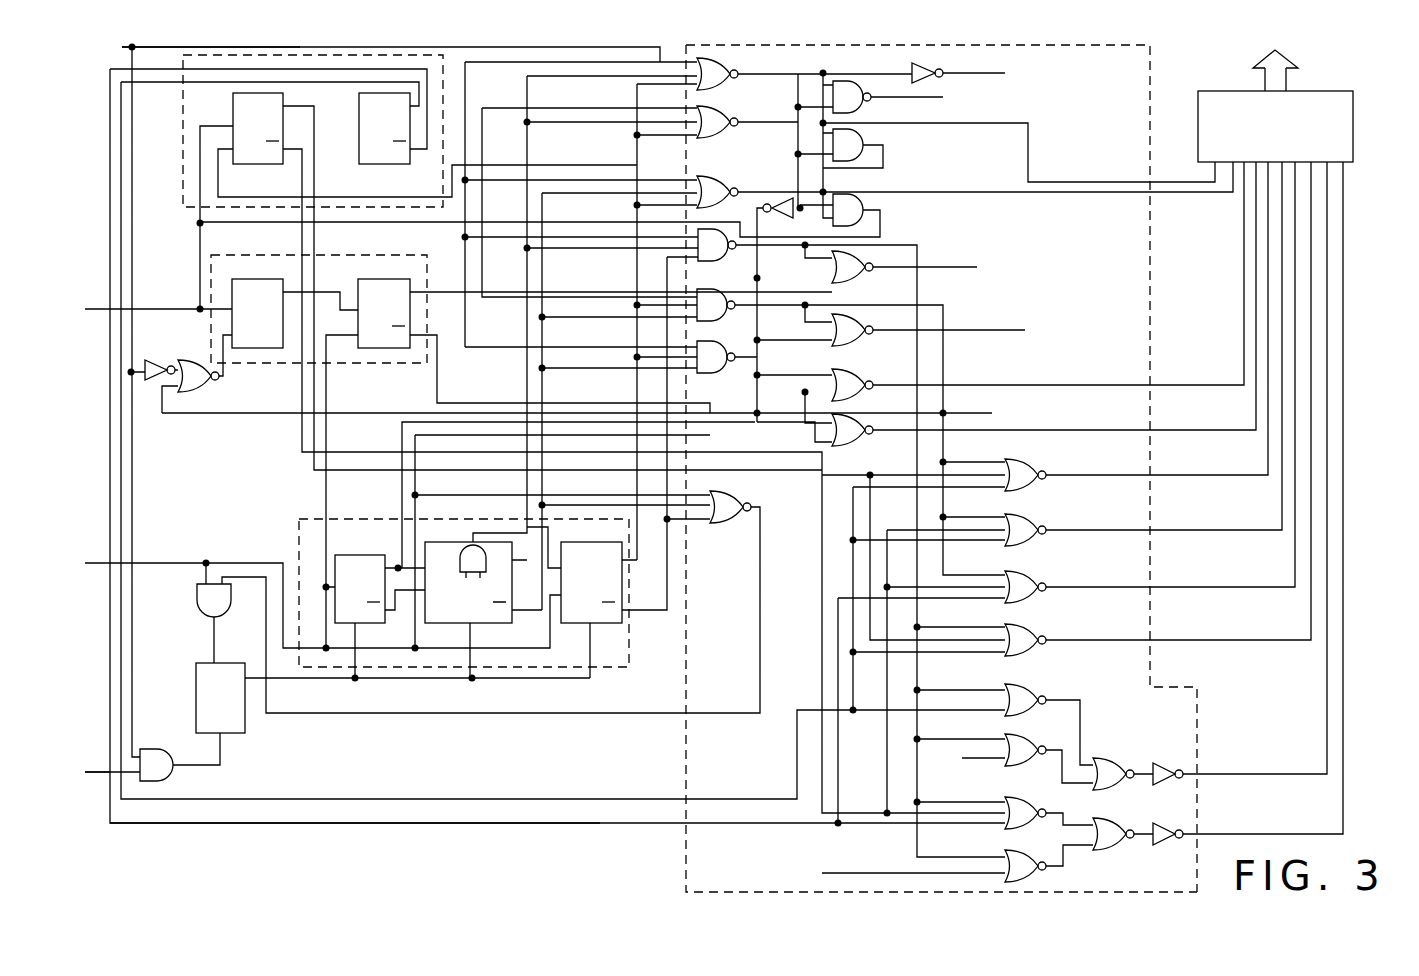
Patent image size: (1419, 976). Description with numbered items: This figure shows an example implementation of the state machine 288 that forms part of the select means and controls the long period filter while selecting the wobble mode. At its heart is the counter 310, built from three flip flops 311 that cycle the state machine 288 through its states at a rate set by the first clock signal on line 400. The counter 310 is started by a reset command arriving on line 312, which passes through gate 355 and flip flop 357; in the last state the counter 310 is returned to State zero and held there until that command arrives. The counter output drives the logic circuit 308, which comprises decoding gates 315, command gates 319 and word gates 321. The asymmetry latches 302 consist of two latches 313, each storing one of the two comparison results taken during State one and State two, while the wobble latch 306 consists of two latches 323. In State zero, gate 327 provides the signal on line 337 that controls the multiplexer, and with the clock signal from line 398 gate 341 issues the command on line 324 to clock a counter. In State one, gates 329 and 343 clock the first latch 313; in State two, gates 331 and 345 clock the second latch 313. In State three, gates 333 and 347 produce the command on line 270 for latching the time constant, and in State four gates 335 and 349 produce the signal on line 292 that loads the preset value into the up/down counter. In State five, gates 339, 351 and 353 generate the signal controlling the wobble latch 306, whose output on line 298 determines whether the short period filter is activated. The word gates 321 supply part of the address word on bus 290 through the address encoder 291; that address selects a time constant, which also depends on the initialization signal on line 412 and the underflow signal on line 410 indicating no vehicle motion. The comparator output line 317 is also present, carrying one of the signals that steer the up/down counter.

The state machine 288 is at (312, 840).
The bus 290 is at (1288, 82).
The address encoder 291 is at (1355, 137).
The line 292 is at (1000, 330).
The line 298 is at (985, 408).
The line 270 is at (957, 268).
The asymmetry latches 302 is at (183, 185).
The wobble latch 306 is at (345, 255).
The logic circuit 308 is at (680, 838).
The counter 310 is at (615, 667).
The flip flops 311 is at (362, 550).
The line 312 is at (90, 775).
The latches 313 is at (195, 102).
The decoding gates 315 is at (762, 486).
The output line 317 is at (148, 312).
The command gates 319 is at (1088, 124).
The word gates 321 is at (1079, 485).
The latches 323 is at (285, 262).
The line 324 is at (895, 100).
The gate 327 is at (720, 82).
The gate 329 is at (722, 132).
The gate 331 is at (703, 173).
The gate 333 is at (727, 259).
The gate 335 is at (718, 313).
The line 337 is at (1005, 73).
The gate 339 is at (707, 347).
The gate 341 is at (845, 92).
The gate 343 is at (855, 140).
The gate 345 is at (855, 205).
The gate 347 is at (842, 282).
The gate 349 is at (842, 345).
The gate 351 is at (860, 378).
The gate 353 is at (842, 445).
The gate 355 is at (157, 755).
The flip flop 357 is at (233, 733).
The line 398 is at (512, 47).
The line 400 is at (165, 562).
The line 410 is at (880, 873).
The line 412 is at (1000, 762).